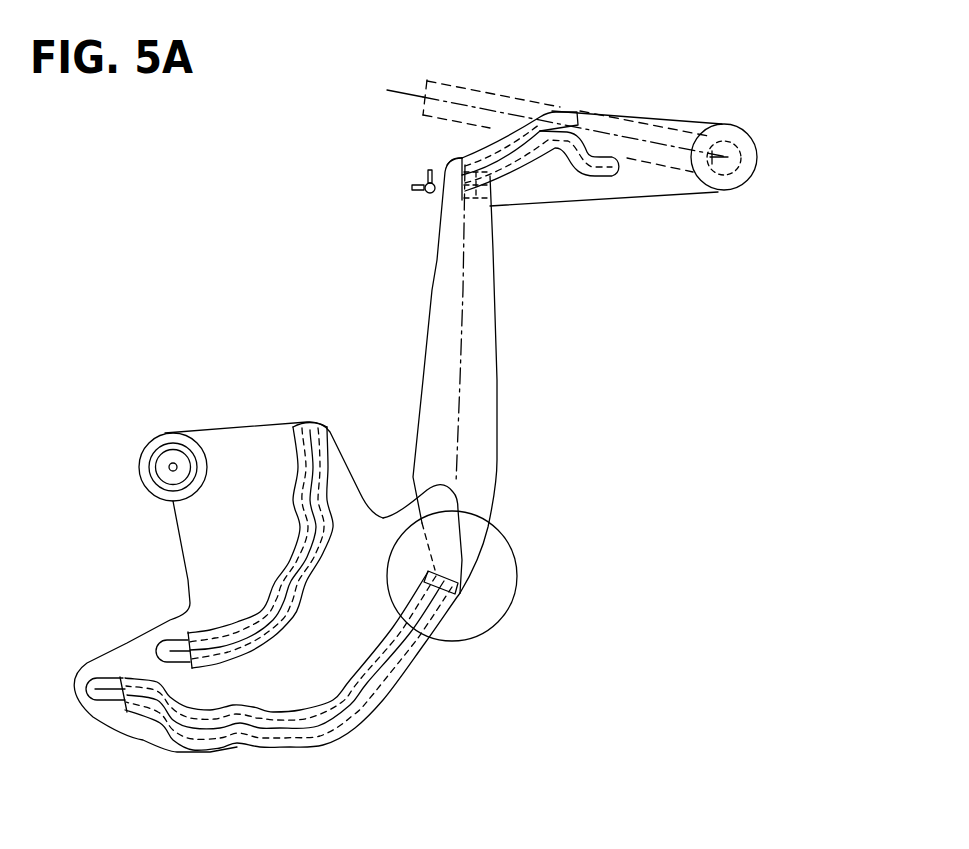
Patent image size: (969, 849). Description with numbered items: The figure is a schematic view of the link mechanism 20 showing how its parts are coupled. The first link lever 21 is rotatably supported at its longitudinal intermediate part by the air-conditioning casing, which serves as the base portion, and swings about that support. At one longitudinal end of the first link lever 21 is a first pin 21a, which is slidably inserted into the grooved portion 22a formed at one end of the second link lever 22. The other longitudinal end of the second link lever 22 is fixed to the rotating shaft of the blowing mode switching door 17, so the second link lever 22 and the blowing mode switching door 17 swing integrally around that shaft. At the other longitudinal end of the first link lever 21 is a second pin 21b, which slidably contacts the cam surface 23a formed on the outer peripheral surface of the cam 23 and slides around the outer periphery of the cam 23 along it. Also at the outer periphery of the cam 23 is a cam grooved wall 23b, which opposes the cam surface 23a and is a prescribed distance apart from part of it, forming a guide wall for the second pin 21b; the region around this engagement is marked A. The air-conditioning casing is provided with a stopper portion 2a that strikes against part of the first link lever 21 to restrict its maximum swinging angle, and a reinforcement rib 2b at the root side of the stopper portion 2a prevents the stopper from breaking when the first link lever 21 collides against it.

The blowing mode switching door 17 is at (490, 92).
The second link lever 22 is at (700, 118).
The grooved portion 22a is at (571, 110).
The first link lever 21 is at (440, 348).
The first pin 21a is at (448, 158).
The second pin 21b is at (452, 567).
The link mechanism 20 is at (523, 350).
The stopper portion 2a is at (428, 193).
The reinforcement rib 2b is at (428, 174).
The detail region A is at (513, 548).
The cam 23 is at (333, 638).
The cam surface 23a is at (492, 524).
The cam grooved wall 23b is at (407, 677).